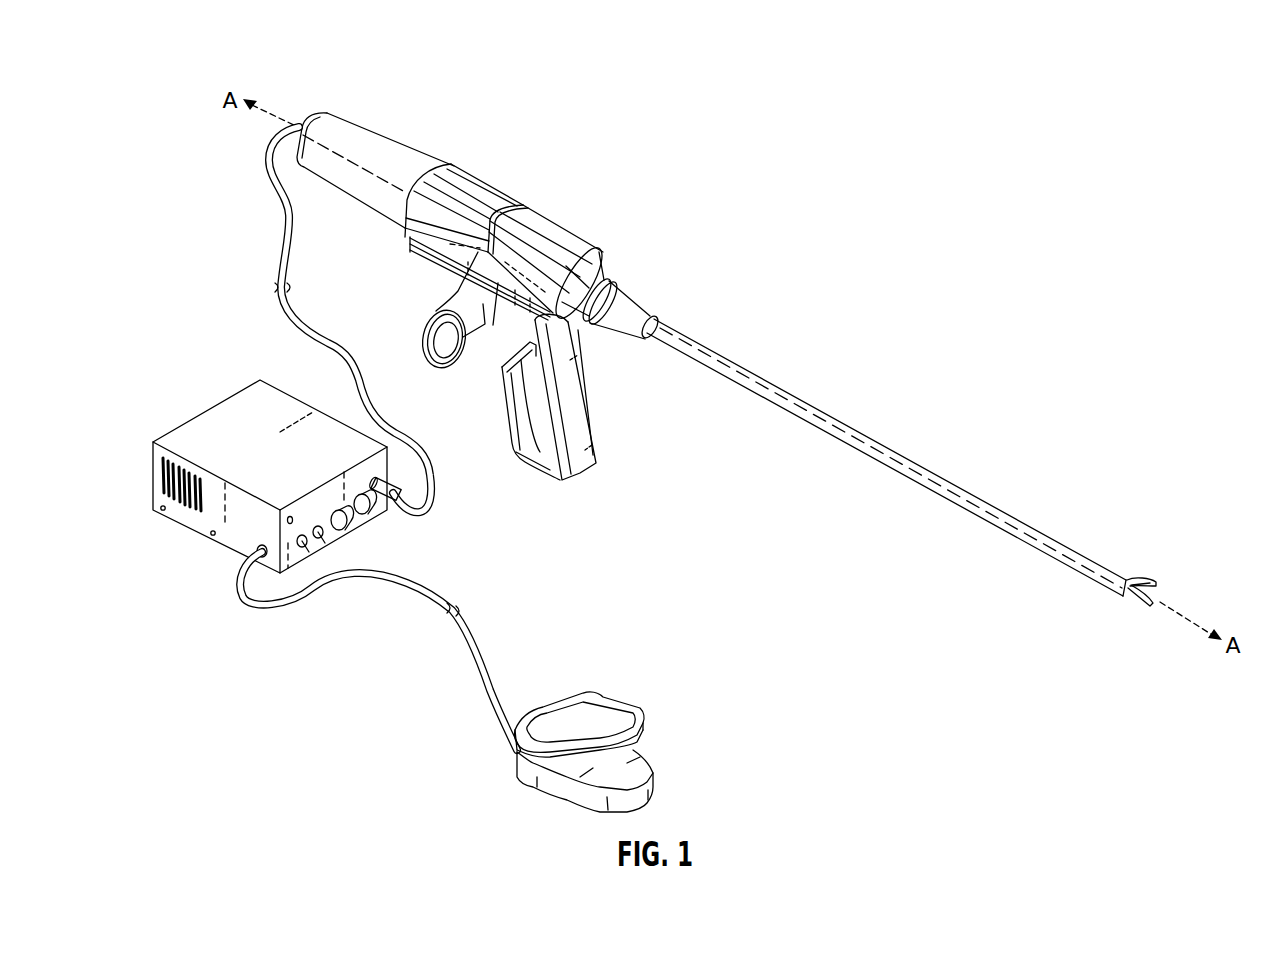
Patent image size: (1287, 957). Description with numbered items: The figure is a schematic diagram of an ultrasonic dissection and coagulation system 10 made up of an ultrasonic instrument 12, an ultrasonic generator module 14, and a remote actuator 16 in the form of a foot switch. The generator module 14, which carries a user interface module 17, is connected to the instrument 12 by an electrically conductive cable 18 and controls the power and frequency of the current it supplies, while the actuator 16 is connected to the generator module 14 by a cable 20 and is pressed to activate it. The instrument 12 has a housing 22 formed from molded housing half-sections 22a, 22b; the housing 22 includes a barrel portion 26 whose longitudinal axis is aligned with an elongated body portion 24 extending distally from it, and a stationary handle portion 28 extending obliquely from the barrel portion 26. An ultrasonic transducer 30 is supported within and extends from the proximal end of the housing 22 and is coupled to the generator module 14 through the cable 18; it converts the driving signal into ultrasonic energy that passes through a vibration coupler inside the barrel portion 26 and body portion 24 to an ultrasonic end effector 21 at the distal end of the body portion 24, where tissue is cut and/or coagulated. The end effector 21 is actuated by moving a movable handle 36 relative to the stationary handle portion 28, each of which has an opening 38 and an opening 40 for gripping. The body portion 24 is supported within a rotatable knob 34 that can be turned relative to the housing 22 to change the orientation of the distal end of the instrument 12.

The ultrasonic dissection and coagulation system 10 is at (797, 240).
The ultrasonic instrument 12 is at (758, 369).
The ultrasonic generator module 14 is at (218, 415).
The remote actuator 16 is at (553, 707).
The user interface module 17 is at (317, 562).
The electrically conductive cable 18 is at (293, 208).
The cable 20 is at (413, 597).
The ultrasonic end effector 21 is at (1160, 598).
The housing 22 is at (493, 180).
The housing half-section 22a is at (603, 397).
The housing half-section 22b is at (504, 422).
The elongated body portion 24 is at (853, 427).
The barrel portion 26 is at (553, 213).
The stationary handle portion 28 is at (583, 427).
The ultrasonic transducer 30 is at (375, 143).
The rotatable knob 34 is at (615, 290).
The movable handle 36 is at (423, 341).
The opening 38 is at (432, 361).
The opening 40 is at (497, 411).